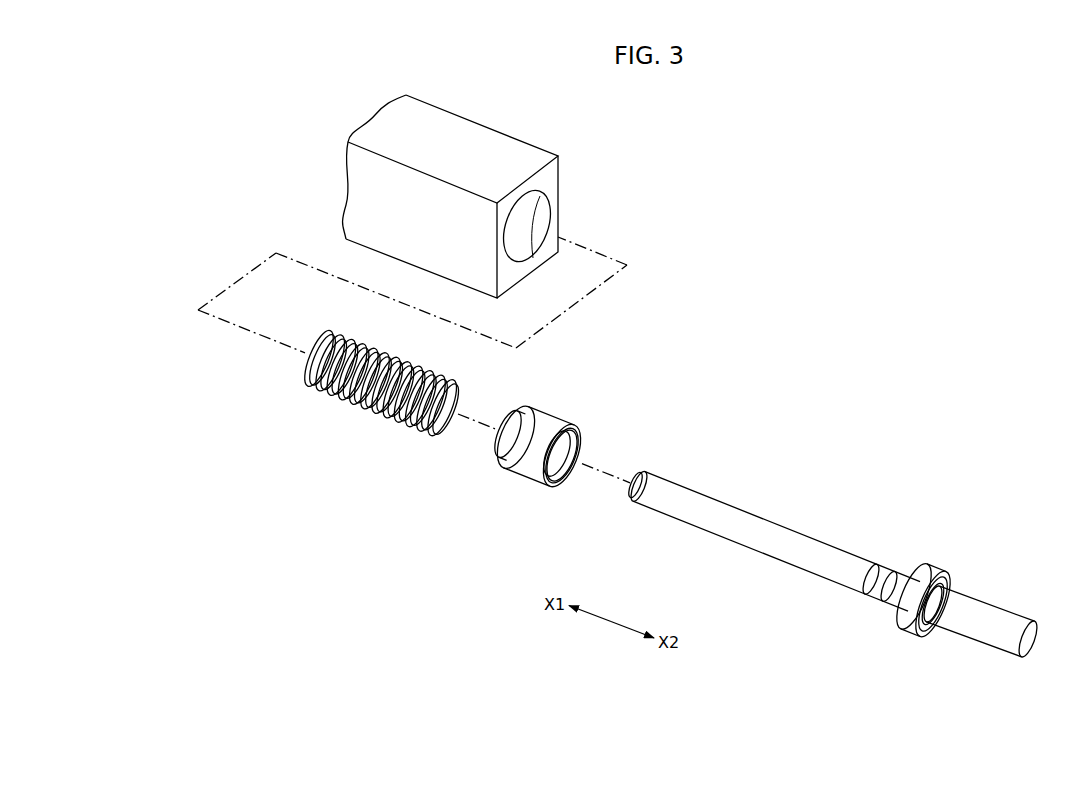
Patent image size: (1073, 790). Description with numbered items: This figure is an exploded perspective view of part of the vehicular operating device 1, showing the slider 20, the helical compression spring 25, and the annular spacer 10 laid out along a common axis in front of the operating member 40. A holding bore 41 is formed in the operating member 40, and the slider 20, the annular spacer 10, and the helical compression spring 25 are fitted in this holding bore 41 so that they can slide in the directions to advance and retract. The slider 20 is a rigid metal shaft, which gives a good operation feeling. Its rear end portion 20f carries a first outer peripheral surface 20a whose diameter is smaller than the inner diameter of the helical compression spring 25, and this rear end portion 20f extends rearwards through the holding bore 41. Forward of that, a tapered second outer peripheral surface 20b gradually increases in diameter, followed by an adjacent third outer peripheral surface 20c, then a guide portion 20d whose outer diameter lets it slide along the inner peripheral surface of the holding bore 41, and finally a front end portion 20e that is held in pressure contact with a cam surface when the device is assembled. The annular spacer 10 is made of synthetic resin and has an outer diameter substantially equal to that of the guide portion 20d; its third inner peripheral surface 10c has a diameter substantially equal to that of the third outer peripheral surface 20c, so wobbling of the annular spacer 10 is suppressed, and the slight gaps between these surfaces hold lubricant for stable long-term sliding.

The vehicular operating device 1 is at (338, 168).
The operating member 40 is at (534, 142).
The holding bore 41 is at (538, 206).
The helical compression spring 25 is at (409, 444).
The annular spacer 10 is at (574, 489).
The third inner peripheral surface 10c is at (568, 453).
The slider 20 is at (833, 583).
The first outer peripheral surface 20a is at (807, 547).
The second outer peripheral surface 20b is at (883, 572).
The third outer peripheral surface 20c is at (883, 596).
The guide portion 20d is at (927, 572).
The front end portion 20e is at (960, 629).
The rear end portion 20f is at (730, 530).